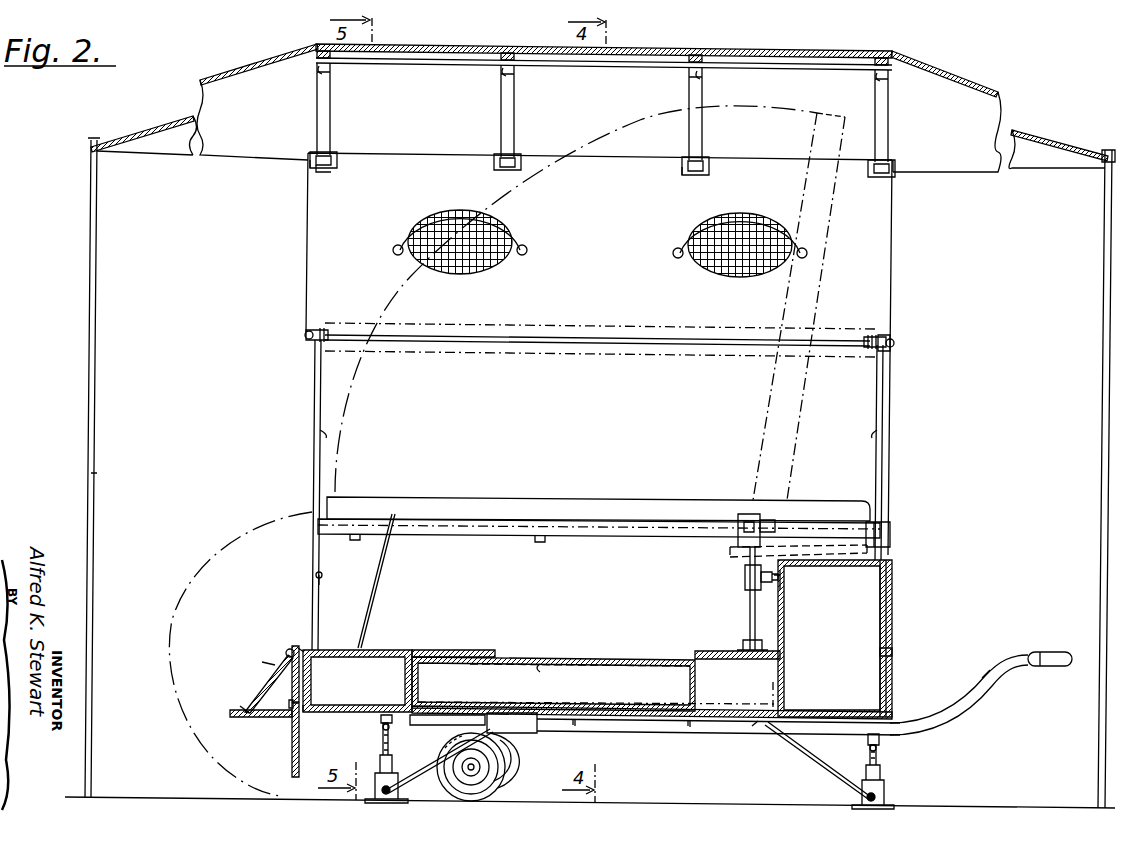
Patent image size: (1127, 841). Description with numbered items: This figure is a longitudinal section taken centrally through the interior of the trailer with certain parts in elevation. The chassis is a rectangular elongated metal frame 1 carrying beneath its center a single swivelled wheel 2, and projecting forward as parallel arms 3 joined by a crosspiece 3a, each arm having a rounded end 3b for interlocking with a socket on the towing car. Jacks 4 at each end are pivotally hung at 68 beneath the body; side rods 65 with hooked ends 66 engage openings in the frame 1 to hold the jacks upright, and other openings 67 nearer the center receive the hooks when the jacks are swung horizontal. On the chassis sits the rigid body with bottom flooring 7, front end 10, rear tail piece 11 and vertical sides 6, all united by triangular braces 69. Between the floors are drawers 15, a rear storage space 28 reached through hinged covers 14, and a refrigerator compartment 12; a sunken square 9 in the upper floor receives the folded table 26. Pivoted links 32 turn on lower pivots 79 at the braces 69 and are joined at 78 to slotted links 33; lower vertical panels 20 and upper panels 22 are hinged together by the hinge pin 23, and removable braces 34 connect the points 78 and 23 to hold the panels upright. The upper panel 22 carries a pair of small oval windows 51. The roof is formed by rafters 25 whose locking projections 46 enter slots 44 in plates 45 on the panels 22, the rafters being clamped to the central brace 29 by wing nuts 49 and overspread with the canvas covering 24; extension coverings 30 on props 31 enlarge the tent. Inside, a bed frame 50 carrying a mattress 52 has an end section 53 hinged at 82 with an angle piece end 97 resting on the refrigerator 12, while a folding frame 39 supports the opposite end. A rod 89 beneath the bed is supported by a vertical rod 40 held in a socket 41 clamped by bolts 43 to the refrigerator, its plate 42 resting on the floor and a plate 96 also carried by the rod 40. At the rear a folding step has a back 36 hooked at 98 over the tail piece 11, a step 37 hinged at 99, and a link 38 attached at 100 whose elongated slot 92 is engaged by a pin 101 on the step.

The chassis frame 1 is at (634, 733).
The wheel 2 is at (500, 776).
The arms 3 is at (962, 712).
The crosspiece 3a is at (990, 664).
The rounded end 3b is at (1050, 652).
The jacks 4 is at (393, 757).
The sides 6 is at (275, 522).
The bottom flooring 7 is at (330, 712).
The sunken square 9 is at (543, 668).
The front end 10 is at (890, 617).
The tail piece 11 is at (312, 650).
The refrigerator compartment 12 is at (880, 600).
The hinged covers 14 is at (388, 648).
The drawers 15 is at (770, 695).
The lower vertical panels 20 is at (306, 404).
The upper vertical panels 22 is at (307, 246).
The longitudinal hinge 23 is at (891, 347).
The canvas covering 24 is at (786, 50).
The rafters 25 is at (330, 105).
The table 26 is at (578, 658).
The storage space 28 is at (360, 690).
The central brace 29 is at (640, 70).
The extension tent coverings 30 is at (226, 76).
The props 31 is at (96, 312).
The pivoted links 32 is at (314, 449).
The slotted links 33 is at (322, 432).
The brace rods 34 is at (307, 340).
The step back 36 is at (292, 746).
The step 37 is at (237, 718).
The link 38 is at (262, 662).
The folding frame 39 is at (376, 576).
The vertical rod 40 is at (749, 605).
The socket 41 is at (745, 577).
The plate 42 is at (743, 648).
The clamping bolts 43 is at (767, 583).
The slots 44 is at (325, 170).
The plates 45 is at (315, 170).
The locking projections 46 is at (335, 155).
The wing nuts 49 is at (503, 72).
The bed frames 50 is at (770, 389).
The screen vent 51 is at (492, 263).
The mattress 52 is at (790, 390).
The end sections 53 is at (830, 520).
The side rods 65 is at (430, 770).
The hooked ends 66 is at (757, 726).
The openings 67 is at (577, 726).
The pivots 68 is at (392, 722).
The triangular braces 69 is at (313, 586).
The pivotal points 78 is at (328, 328).
The lower pivots 79 is at (314, 575).
The hinge 82 is at (770, 522).
The rod 89 is at (748, 522).
The elongated slot 92 is at (266, 684).
The plate 96 is at (785, 592).
The angle piece ends 97 is at (891, 530).
The hinge or hook 98 is at (299, 648).
The hinge 99 is at (291, 706).
The link attachment 100 is at (286, 653).
The pin 101 is at (243, 706).